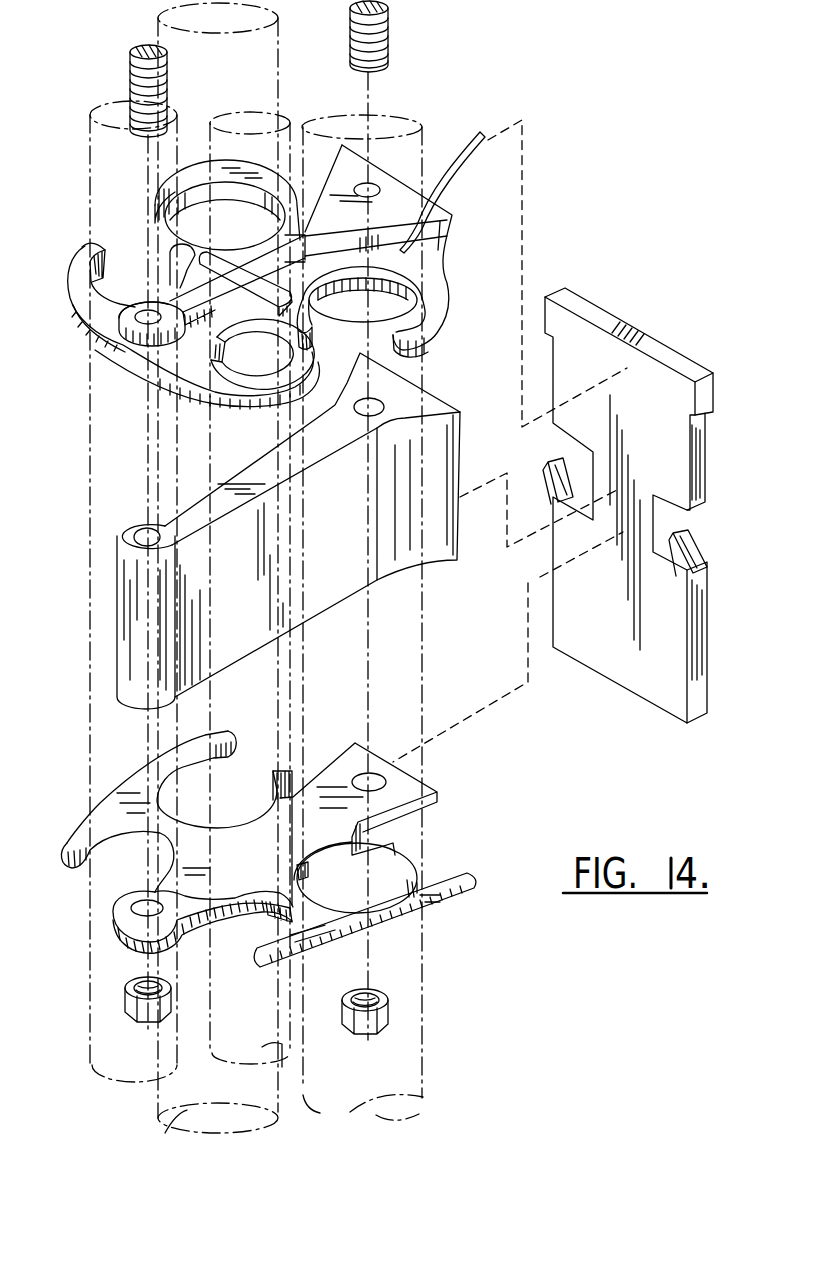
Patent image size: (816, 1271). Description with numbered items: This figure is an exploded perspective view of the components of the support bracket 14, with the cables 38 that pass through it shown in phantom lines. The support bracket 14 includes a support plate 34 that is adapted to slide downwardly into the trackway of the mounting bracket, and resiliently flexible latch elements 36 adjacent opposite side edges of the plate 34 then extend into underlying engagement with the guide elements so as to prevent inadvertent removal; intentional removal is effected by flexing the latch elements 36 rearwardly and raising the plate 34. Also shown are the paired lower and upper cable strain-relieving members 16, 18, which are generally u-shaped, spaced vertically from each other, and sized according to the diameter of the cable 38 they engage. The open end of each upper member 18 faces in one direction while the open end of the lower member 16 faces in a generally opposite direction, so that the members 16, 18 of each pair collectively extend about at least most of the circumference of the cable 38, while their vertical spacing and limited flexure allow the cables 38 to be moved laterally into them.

The support bracket 14 is at (67, 700).
The lower cable strain-relieving member 16 is at (273, 808).
The upper cable strain-relieving member 18 is at (105, 250).
The support plate 34 is at (645, 338).
The latch element 36 is at (549, 470).
The cable 38 is at (120, 1067).